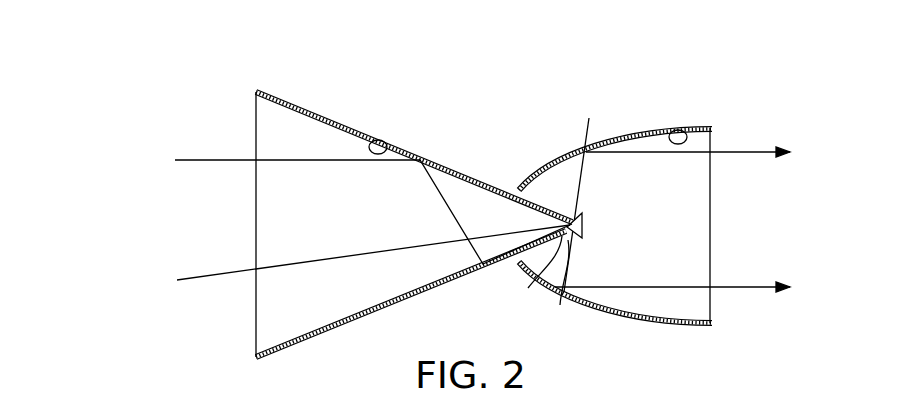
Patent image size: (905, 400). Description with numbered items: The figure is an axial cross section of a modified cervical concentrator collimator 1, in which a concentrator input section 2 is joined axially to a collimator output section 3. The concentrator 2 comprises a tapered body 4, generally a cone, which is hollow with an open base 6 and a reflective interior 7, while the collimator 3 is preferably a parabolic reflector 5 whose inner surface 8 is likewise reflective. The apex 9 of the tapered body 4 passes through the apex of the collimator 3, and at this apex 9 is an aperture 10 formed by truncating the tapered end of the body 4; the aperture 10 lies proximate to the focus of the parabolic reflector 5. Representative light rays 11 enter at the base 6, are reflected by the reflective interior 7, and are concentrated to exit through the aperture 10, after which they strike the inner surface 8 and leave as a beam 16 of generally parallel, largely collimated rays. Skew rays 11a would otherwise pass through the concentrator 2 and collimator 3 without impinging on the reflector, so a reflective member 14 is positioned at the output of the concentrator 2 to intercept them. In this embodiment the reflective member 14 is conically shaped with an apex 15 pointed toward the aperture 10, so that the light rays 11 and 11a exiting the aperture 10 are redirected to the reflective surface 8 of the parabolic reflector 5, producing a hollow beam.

The cervical concentrator collimator 1 is at (466, 108).
The concentrator input section 2 is at (293, 97).
The collimator output section 3 is at (622, 126).
The tapered body 4 is at (348, 127).
The parabolic reflector 5 is at (589, 118).
The open base 6 is at (243, 192).
The reflective interior 7 is at (385, 141).
The inner surface 8 is at (683, 130).
The apex 9 is at (556, 196).
The aperture 10 is at (538, 274).
The light rays 11 is at (196, 160).
The skew rays 11a is at (186, 284).
The reflective member 14 is at (590, 224).
The apex 15 is at (560, 286).
The beam 16 is at (767, 265).